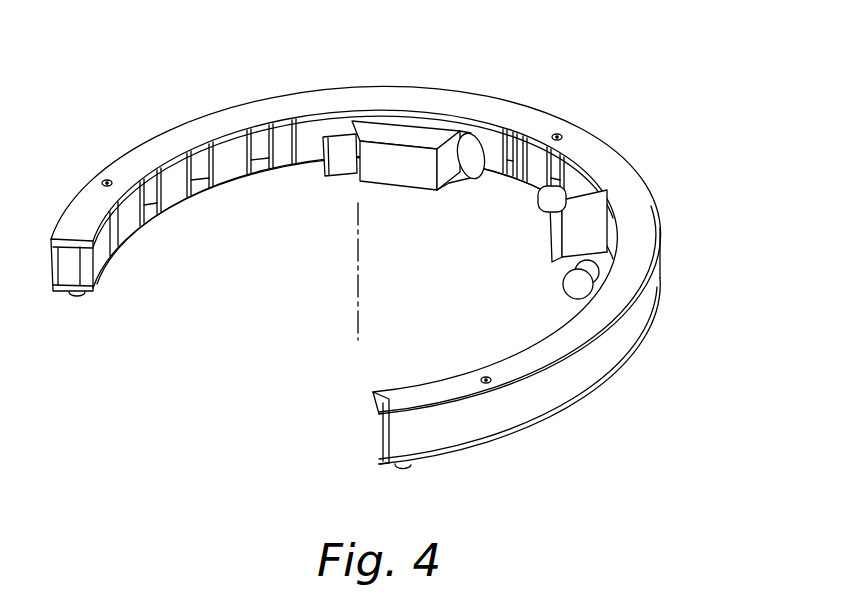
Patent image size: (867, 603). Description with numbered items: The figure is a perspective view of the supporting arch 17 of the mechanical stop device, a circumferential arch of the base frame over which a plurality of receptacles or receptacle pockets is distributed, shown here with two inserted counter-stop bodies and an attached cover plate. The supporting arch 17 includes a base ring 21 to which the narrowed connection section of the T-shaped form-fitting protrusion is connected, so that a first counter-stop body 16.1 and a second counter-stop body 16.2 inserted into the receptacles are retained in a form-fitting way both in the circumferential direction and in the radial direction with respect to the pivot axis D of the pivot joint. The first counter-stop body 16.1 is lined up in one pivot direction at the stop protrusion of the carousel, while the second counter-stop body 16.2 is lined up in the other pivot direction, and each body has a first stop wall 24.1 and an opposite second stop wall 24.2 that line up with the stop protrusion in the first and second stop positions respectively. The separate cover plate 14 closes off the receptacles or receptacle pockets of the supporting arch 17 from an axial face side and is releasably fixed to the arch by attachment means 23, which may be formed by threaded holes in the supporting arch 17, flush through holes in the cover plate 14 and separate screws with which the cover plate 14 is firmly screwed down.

The cover plate 14 is at (637, 247).
The first counter-stop body 16.1 is at (400, 173).
The second counter-stop body 16.2 is at (557, 240).
The supporting arch 17 is at (575, 424).
The base ring 21 is at (600, 352).
The attachment means 23 is at (106, 181).
The first stop wall 24.1 is at (323, 153).
The second stop wall 24.2 is at (476, 165).
The pivot axis D is at (358, 277).